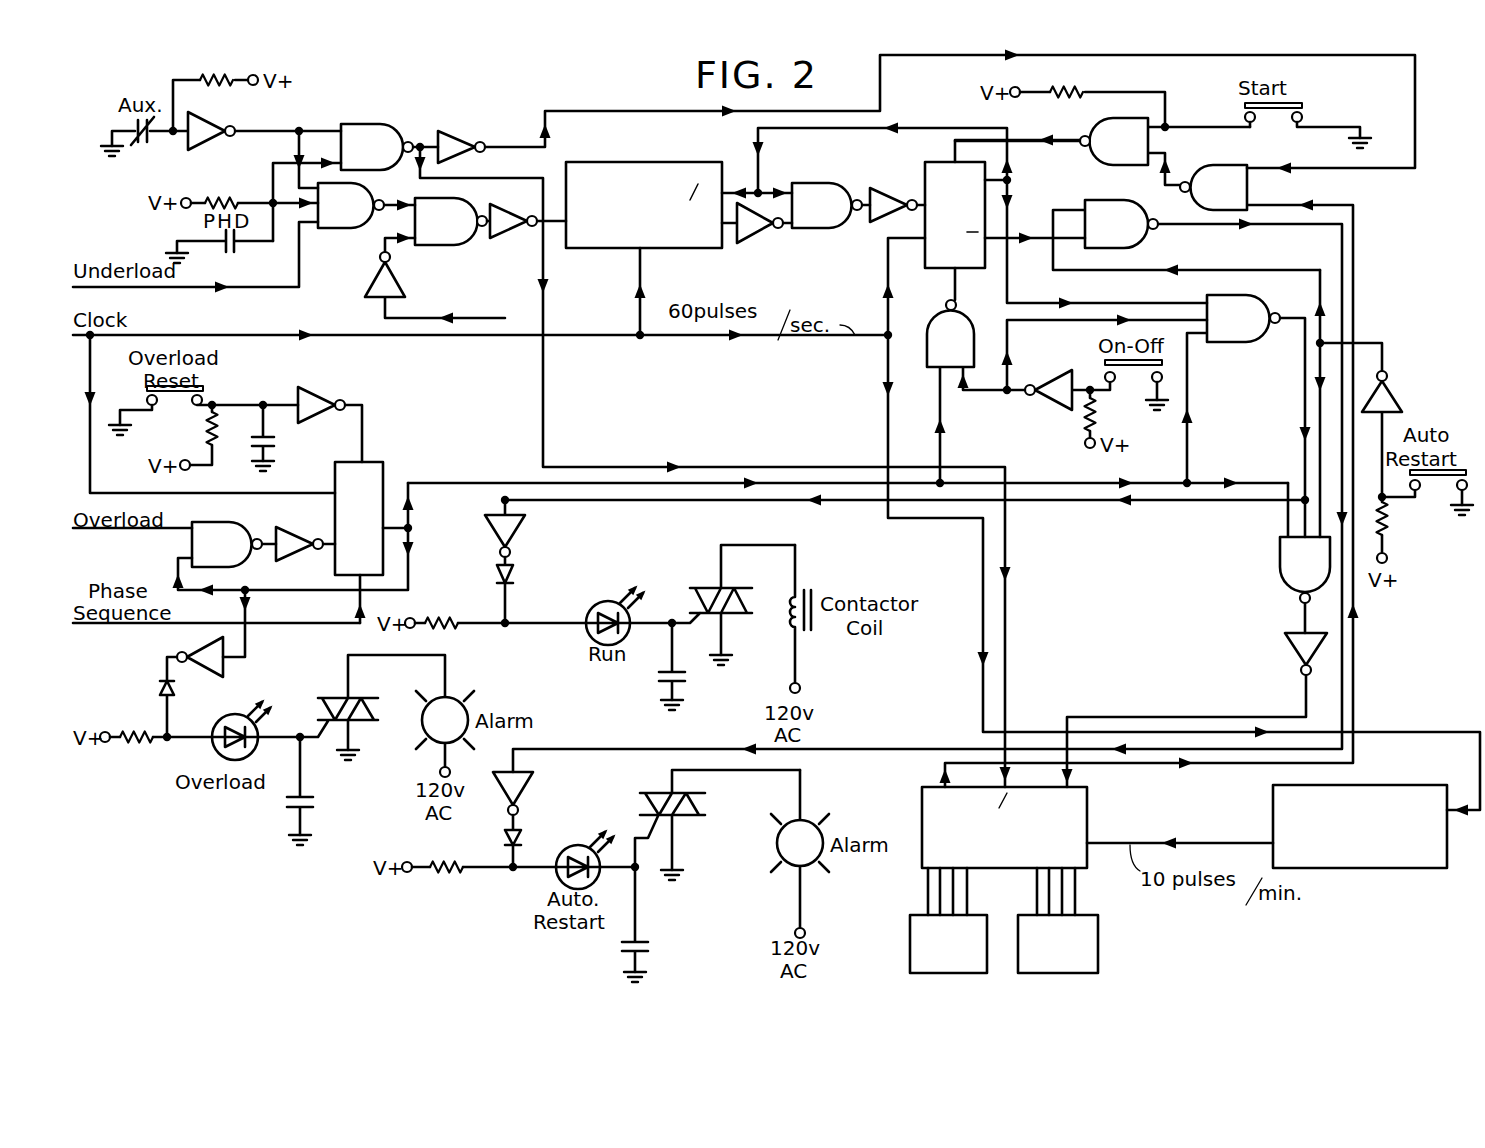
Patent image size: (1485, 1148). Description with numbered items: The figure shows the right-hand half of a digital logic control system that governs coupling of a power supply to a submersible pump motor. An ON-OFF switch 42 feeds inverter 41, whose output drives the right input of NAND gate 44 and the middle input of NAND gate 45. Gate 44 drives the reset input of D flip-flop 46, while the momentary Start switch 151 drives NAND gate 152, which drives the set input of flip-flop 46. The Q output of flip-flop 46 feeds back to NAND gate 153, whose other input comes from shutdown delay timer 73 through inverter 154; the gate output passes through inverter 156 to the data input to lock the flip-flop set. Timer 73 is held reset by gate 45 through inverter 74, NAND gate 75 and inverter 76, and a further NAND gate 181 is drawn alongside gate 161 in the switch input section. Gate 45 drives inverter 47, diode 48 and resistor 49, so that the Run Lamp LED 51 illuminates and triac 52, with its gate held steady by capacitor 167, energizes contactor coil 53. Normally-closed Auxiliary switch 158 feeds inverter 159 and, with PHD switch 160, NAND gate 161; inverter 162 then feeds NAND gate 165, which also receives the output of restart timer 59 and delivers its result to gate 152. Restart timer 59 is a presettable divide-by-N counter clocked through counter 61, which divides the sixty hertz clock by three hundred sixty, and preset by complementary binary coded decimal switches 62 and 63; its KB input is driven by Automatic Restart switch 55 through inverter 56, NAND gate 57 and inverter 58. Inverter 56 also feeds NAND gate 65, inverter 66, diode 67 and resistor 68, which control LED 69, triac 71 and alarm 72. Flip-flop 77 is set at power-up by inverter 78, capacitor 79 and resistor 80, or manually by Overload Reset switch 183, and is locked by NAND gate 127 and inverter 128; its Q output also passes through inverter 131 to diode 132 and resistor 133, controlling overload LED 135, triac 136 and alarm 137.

The Auxiliary switch 158 is at (148, 140).
The inverter 159 is at (212, 119).
The PHD switch 160 is at (228, 251).
The NAND gate 161 is at (389, 147).
The inverter 162 is at (450, 130).
The NAND gate 181 is at (366, 205).
The NAND gate 75 is at (451, 221).
The inverter 76 is at (504, 210).
The inverter 74 is at (398, 269).
The shutdown delay timer 73 is at (670, 164).
The inverter 154 is at (765, 235).
The NAND gate 153 is at (831, 205).
The inverter 156 is at (888, 192).
The D flip-flop 46 is at (925, 183).
The NAND gate 44 is at (978, 391).
The inverter 41 is at (1052, 408).
The ON-OFF switch 42 is at (1105, 372).
The NAND gate 45 is at (1246, 416).
The inverter 56 is at (1390, 395).
The Automatic Restart switch 55 is at (1426, 493).
The NAND gate 57 is at (1305, 558).
The inverter 58 is at (1286, 647).
The NAND gate 65 is at (930, 486).
The NAND gate 152 is at (1102, 151).
The Start switch 151 is at (1308, 105).
The NAND gate 165 is at (1149, 476).
The restart timer 59 is at (922, 799).
The counter 61 is at (1273, 799).
The binary coded decimal switch 62 is at (910, 950).
The binary coded decimal switch 63 is at (1098, 945).
The Overload Reset switch 183 is at (205, 390).
The resistor 80 is at (205, 442).
The capacitor 79 is at (274, 440).
The inverter 78 is at (318, 397).
The D flip-flop 77 is at (380, 462).
The NAND gate 127 is at (234, 544).
The inverter 128 is at (294, 556).
The inverter 131 is at (210, 672).
The diode 132 is at (158, 695).
The resistor 133 is at (140, 744).
The overload LED 135 is at (210, 724).
The triac 136 is at (317, 699).
The alarm 137 is at (456, 698).
The inverter 47 is at (521, 524).
The diode 48 is at (495, 575).
The resistor 49 is at (441, 618).
The Run Lamp LED 51 is at (603, 604).
The capacitor 167 is at (660, 683).
The triac 52 is at (691, 610).
The contactor coil 53 is at (792, 626).
The inverter 66 is at (522, 784).
The diode 67 is at (505, 841).
The resistor 68 is at (443, 878).
The LED 69 is at (565, 853).
The triac 71 is at (705, 802).
The alarm 72 is at (819, 819).